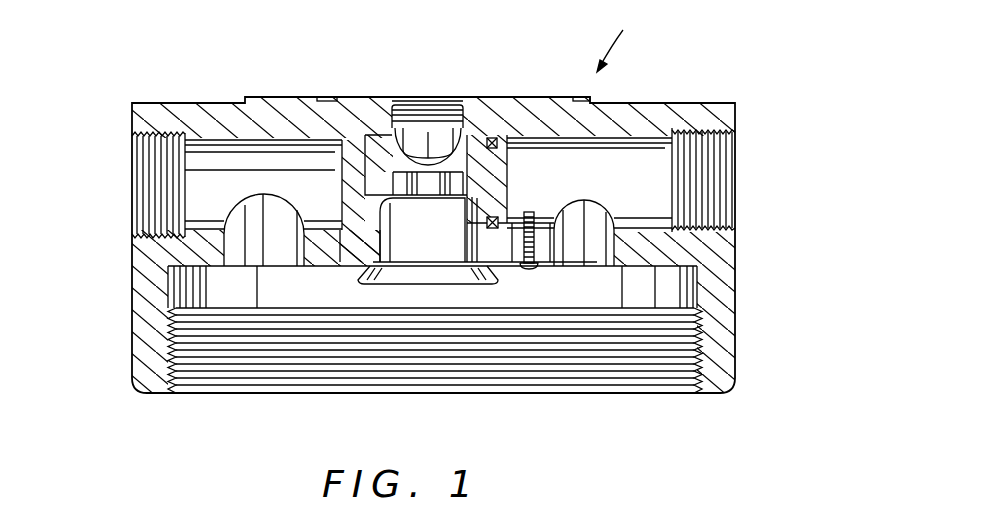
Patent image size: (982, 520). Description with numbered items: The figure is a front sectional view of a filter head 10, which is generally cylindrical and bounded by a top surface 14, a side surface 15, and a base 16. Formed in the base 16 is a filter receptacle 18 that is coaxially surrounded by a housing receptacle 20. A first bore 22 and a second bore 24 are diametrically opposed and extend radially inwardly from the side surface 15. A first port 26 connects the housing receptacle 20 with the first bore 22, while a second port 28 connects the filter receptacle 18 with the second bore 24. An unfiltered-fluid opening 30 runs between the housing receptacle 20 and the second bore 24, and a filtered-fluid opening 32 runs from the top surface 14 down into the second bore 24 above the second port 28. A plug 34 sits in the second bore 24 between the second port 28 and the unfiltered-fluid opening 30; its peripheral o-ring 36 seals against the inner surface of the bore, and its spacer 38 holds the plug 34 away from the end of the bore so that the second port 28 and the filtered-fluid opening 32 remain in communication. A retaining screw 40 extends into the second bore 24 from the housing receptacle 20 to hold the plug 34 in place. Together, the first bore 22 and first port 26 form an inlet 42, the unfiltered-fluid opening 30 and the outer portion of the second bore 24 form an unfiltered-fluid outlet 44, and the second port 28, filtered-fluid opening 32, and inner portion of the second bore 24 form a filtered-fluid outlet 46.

The filter head 10 is at (657, 35).
The top surface 14 is at (702, 100).
The side surface 15 is at (735, 290).
The base 16 is at (705, 393).
The filter receptacle 18 is at (386, 260).
The housing receptacle 20 is at (221, 266).
The first bore 22 is at (257, 140).
The second bore 24 is at (608, 137).
The first port 26 is at (300, 240).
The second port 28 is at (392, 238).
The unfiltered-fluid opening 30 is at (625, 236).
The filtered-fluid opening 32 is at (443, 105).
The plug 34 is at (541, 137).
The o-ring 36 is at (493, 137).
The spacer 38 is at (383, 150).
The retaining screw 40 is at (530, 272).
The inlet 42 is at (186, 173).
The unfiltered-fluid outlet 44 is at (677, 167).
The filtered-fluid outlet 46 is at (415, 88).